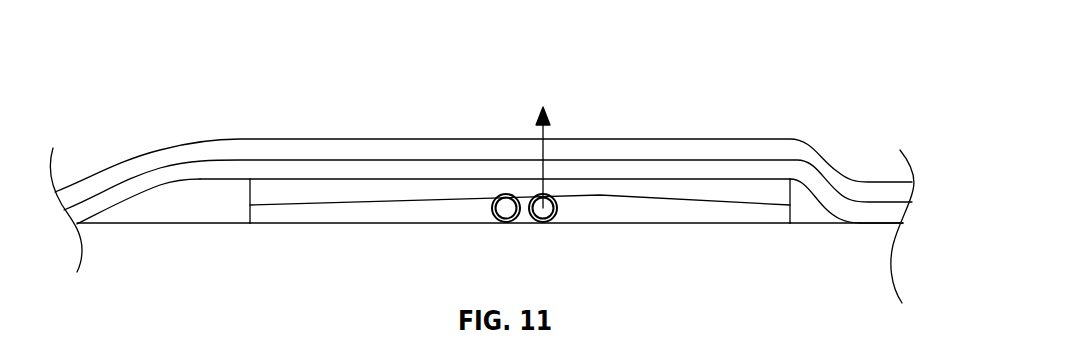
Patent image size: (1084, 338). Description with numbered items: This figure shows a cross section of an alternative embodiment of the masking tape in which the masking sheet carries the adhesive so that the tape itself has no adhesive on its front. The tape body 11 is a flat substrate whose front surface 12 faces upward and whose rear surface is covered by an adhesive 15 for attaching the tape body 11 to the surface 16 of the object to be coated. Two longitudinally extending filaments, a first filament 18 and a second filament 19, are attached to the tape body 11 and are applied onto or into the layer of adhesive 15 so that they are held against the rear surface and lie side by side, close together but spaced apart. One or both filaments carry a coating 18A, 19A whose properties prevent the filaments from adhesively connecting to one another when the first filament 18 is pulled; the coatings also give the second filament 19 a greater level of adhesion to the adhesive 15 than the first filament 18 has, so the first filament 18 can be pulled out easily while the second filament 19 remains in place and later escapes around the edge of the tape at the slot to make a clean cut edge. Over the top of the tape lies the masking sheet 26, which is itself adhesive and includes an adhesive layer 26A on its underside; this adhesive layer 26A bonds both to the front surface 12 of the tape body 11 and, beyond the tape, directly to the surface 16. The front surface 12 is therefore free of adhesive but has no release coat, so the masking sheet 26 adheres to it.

The masking sheet 26 is at (305, 143).
The front surface 12 is at (353, 178).
The adhesive layer 26A is at (183, 180).
The tape body 11 is at (668, 195).
The adhesive 15 is at (740, 218).
The surface 16 is at (800, 225).
The coating 19A is at (492, 210).
The second filament 19 is at (508, 221).
The coating 18A is at (558, 207).
The first filament 18 is at (543, 222).